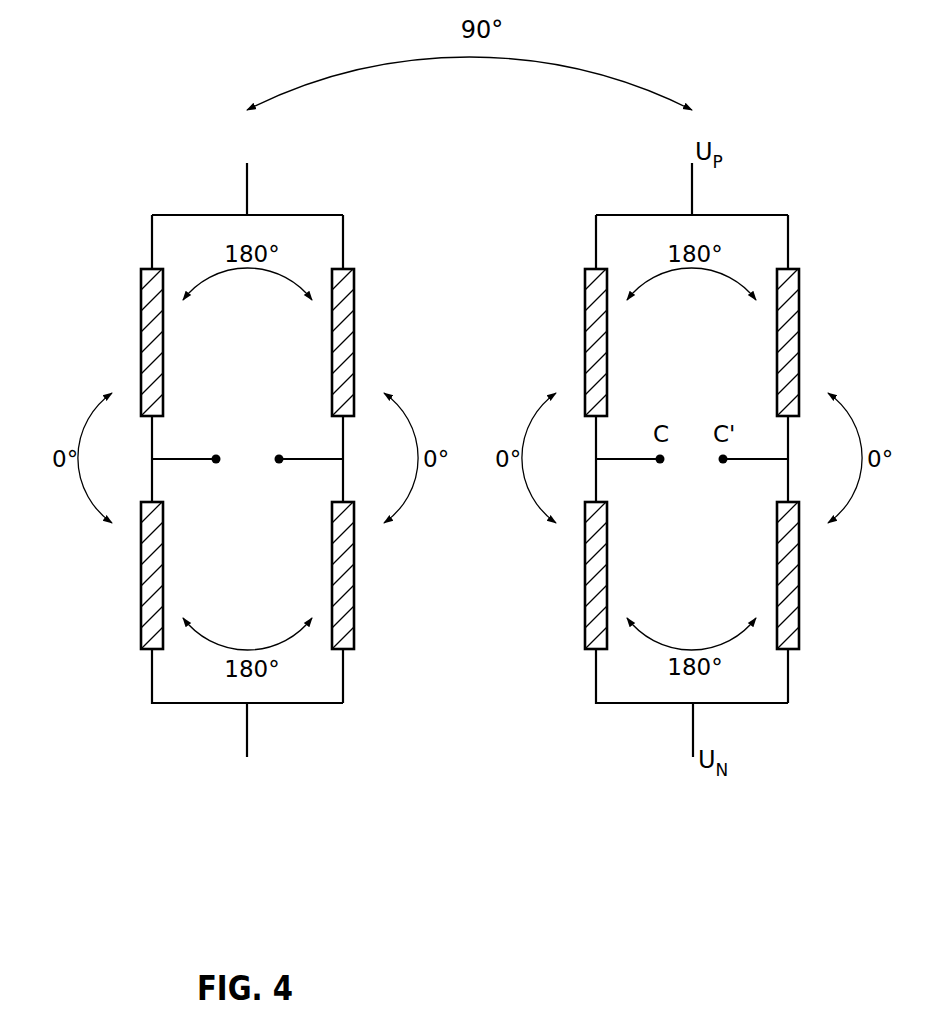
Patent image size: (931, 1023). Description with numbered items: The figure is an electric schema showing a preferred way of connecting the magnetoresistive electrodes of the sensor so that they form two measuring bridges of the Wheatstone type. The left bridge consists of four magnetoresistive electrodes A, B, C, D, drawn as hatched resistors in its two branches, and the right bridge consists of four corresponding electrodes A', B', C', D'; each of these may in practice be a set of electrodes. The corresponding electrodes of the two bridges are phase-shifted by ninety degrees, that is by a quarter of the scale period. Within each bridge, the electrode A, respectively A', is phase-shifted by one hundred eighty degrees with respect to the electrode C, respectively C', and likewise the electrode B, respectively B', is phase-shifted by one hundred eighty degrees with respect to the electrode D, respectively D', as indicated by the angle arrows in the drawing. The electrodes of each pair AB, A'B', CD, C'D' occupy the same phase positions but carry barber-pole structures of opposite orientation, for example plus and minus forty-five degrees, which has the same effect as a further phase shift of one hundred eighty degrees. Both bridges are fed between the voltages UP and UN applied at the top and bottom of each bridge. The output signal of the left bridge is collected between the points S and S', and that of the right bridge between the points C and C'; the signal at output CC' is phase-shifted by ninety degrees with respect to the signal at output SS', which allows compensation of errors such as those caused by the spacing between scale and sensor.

The magnetoresistive electrode A is at (137, 342).
The magnetoresistive electrode B is at (137, 575).
The magnetoresistive electrode C is at (357, 342).
The magnetoresistive electrode D is at (358, 575).
The magnetoresistive electrode A' is at (578, 342).
The magnetoresistive electrode B' is at (578, 575).
The magnetoresistive electrode C' is at (799, 342).
The magnetoresistive electrode D' is at (801, 575).
The output point S is at (189, 442).
The output point S' is at (306, 442).
The feed voltage UP is at (262, 176).
The feed voltage UN is at (265, 741).